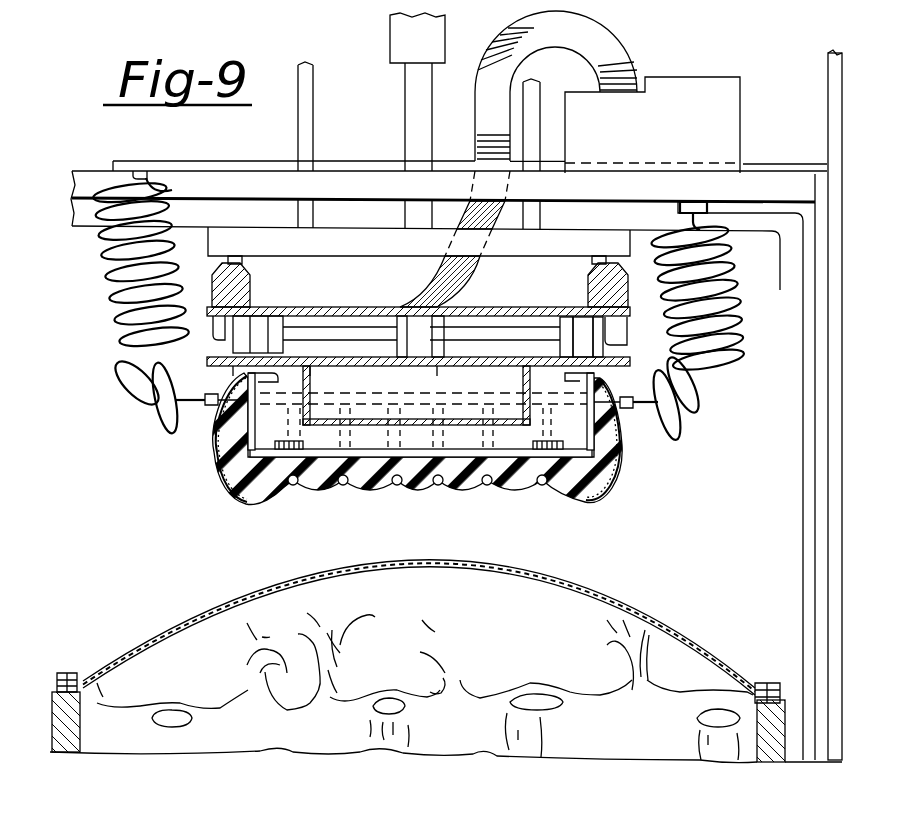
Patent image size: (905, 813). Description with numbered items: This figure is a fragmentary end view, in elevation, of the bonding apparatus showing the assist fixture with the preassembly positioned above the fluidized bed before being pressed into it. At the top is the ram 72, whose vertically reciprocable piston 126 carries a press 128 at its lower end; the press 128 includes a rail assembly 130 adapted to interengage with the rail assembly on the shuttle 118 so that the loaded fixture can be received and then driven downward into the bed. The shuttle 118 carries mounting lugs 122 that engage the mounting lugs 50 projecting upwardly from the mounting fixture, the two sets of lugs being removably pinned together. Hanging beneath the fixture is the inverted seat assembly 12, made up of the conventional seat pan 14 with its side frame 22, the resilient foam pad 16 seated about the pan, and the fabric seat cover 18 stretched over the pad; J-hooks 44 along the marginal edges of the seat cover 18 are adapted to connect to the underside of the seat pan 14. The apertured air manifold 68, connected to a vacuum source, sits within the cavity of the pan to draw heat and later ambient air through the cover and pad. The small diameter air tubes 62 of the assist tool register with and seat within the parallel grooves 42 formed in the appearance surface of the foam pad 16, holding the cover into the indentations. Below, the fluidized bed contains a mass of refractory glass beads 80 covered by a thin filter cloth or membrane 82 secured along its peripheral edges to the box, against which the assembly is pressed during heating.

The seat assembly 12 is at (399, 458).
The seat pan 14 is at (228, 430).
The resilient foam pad 16 is at (268, 490).
The seat cover 18 is at (230, 500).
The side frame 22 is at (615, 445).
The grooves 42 is at (410, 485).
The J-hooks 44 is at (280, 380).
The mounting lugs 50 is at (258, 328).
The air tubes 62 is at (487, 486).
The apertured air manifold 68 is at (462, 418).
The ram 72 is at (386, 41).
The refractory glass beads 80 is at (115, 728).
The filter cloth or membrane 82 is at (115, 662).
The shuttle 118 is at (313, 312).
The mounting lugs 122 is at (563, 337).
The piston 126 is at (415, 95).
The press 128 is at (345, 240).
The rail assembly 130 is at (260, 264).